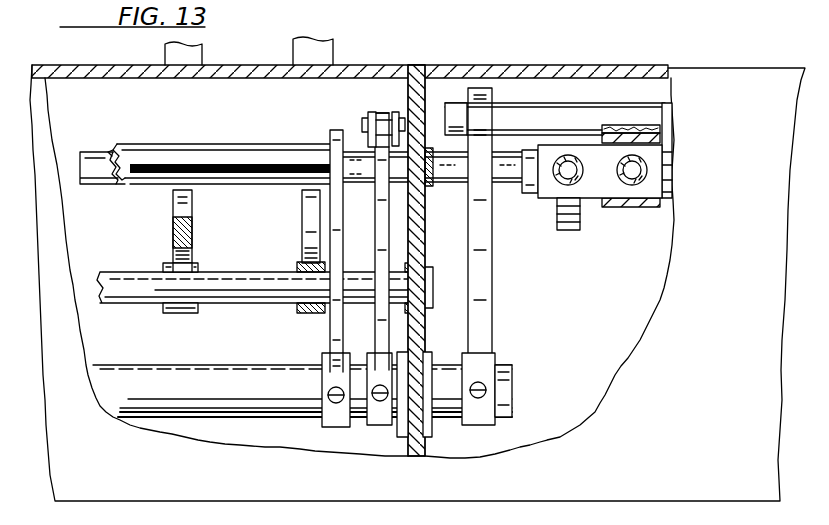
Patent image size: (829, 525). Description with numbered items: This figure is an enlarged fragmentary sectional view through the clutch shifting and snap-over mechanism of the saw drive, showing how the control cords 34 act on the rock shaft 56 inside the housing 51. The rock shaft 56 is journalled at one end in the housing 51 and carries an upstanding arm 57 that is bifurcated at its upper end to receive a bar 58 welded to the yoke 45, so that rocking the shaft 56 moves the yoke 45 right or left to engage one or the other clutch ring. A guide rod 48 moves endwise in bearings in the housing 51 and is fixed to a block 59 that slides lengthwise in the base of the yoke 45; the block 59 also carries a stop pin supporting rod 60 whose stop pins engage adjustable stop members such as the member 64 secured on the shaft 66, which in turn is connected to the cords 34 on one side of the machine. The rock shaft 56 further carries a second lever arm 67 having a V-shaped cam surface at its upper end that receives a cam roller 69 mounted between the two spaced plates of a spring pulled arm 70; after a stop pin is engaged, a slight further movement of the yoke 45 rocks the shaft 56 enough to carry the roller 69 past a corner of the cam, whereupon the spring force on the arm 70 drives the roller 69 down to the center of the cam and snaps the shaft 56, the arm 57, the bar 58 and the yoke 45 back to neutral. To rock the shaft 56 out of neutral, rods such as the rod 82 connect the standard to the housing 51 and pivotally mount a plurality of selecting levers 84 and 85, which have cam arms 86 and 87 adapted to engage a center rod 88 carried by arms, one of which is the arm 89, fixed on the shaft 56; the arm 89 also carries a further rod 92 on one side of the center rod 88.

The cords 34 is at (303, 52).
The yoke 45 is at (663, 143).
The guide rod 48 is at (636, 185).
The housing 51 is at (418, 238).
The rock shaft 56 is at (513, 411).
The upstanding arm 57 is at (490, 322).
The bar 58 is at (451, 109).
The block 59 is at (612, 190).
The stop pin supporting rod 60 is at (578, 184).
The adjustable stop member 64 is at (557, 228).
The shaft 66 is at (100, 186).
The second lever arm 67 is at (381, 222).
The cam roller 69 is at (382, 112).
The spring pulled arm 70 is at (372, 113).
The rod 82 is at (245, 304).
The selecting lever 84 is at (298, 265).
The selecting lever 85 is at (174, 231).
The cam arm 86 is at (304, 224).
The cam arm 87 is at (192, 211).
The center rod 88 is at (116, 151).
The arm 89 is at (330, 337).
The rod 92 is at (263, 160).